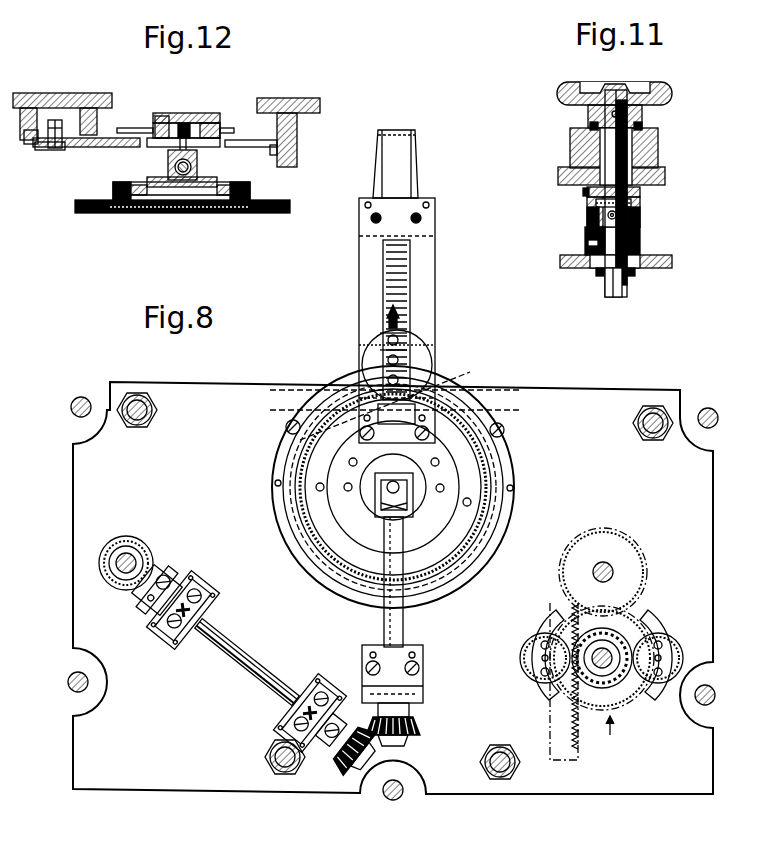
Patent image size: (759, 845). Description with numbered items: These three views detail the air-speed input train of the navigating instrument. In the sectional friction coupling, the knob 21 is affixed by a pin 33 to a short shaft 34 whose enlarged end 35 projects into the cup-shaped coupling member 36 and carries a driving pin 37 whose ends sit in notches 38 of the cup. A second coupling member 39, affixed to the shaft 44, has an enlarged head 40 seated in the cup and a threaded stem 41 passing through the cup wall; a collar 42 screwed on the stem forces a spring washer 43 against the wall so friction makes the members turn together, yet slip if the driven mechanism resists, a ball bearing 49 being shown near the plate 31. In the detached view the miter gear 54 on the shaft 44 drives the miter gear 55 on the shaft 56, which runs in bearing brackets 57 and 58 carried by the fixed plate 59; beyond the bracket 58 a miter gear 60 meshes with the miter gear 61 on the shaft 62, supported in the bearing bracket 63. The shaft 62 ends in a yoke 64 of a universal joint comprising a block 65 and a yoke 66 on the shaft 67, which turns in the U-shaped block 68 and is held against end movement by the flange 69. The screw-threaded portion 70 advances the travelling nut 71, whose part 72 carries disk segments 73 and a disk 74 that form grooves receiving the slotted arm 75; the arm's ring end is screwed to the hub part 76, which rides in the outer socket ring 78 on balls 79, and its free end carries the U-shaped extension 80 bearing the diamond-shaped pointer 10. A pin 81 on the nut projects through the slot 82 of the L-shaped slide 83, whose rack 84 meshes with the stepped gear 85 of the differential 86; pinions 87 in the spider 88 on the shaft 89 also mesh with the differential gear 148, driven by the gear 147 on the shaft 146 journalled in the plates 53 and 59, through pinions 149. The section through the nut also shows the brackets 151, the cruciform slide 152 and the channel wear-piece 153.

In FIG. 8, the diamond-shaped pointer 10 is at (400, 312).
In FIG. 11, the knob 21 is at (672, 92).
In FIG. 11, the plate 31 is at (668, 268).
In FIG. 11, the pin 33 is at (605, 112).
In FIG. 11, the short shaft 34 is at (630, 124).
In FIG. 11, the enlarged end 35 is at (641, 191).
In FIG. 11, the cup-shaped coupling member 36 is at (640, 217).
In FIG. 11, the driving pin 37 is at (583, 192).
In FIG. 11, the notches 38 is at (596, 203).
In FIG. 11, the second coupling member 39 is at (588, 220).
In FIG. 11, the enlarged head 40 is at (636, 226).
In FIG. 11, the stem 41 is at (585, 241).
In FIG. 11, the collar 42 is at (588, 252).
In FIG. 11, the spring washer 43 is at (640, 245).
In FIG. 11, the shaft 44 is at (605, 288).
In FIG. 8, the shaft 44 is at (114, 563).
In FIG. 11, the ball bearing 49 is at (640, 272).
In FIG. 12, the fixed plate 53 is at (50, 94).
In FIG. 8, the miter gear 54 is at (118, 538).
In FIG. 8, the miter gear 55 is at (130, 598).
In FIG. 8, the shaft 56 is at (240, 662).
In FIG. 8, the bearing bracket 57 is at (165, 630).
In FIG. 8, the bearing bracket 58 is at (285, 715).
In FIG. 8, the fixed plate 59 is at (73, 763).
In FIG. 8, the miter gear 60 is at (348, 765).
In FIG. 8, the miter gear 61 is at (418, 740).
In FIG. 8, the shaft 62 is at (404, 632).
In FIG. 8, the bearing bracket 63 is at (424, 686).
In FIG. 8, the yoke 64 is at (414, 500).
In FIG. 8, the block 65 is at (380, 512).
In FIG. 8, the yoke 66 is at (366, 487).
In FIG. 8, the shaft 67 is at (440, 380).
In FIG. 8, the U-shaped block 68 is at (470, 410).
In FIG. 8, the flange 69 is at (455, 390).
In FIG. 12, the screw-threaded portion 70 is at (192, 167).
In FIG. 8, the screw-threaded portion 70 is at (412, 251).
In FIG. 12, the travelling nut 71 is at (170, 160).
In FIG. 8, the travelling nut 71 is at (383, 340).
In FIG. 12, the nut part 72 is at (168, 160).
In FIG. 8, the nut part 72 is at (385, 355).
In FIG. 12, the disk segments 73 is at (150, 180).
In FIG. 8, the disk segments 73 is at (368, 355).
In FIG. 12, the disk 74 is at (205, 213).
In FIG. 12, the slotted arm 75 is at (252, 186).
In FIG. 8, the slotted arm 75 is at (359, 272).
In FIG. 12, the annular hub part 76 is at (250, 197).
In FIG. 8, the annular hub part 76 is at (290, 445).
In FIG. 12, the outer socket ring 78 is at (262, 213).
In FIG. 8, the outer socket ring 78 is at (300, 465).
In FIG. 8, the balls 79 is at (320, 505).
In FIG. 8, the U-shaped extension 80 is at (410, 160).
In FIG. 12, the pin 81 is at (210, 146).
In FIG. 8, the pin 81 is at (362, 363).
In FIG. 12, the slot 82 is at (240, 141).
In FIG. 12, the L-shaped slide 83 is at (96, 147).
In FIG. 12, the rack 84 is at (43, 150).
In FIG. 8, the rack 84 is at (550, 718).
In FIG. 8, the gear 85 is at (615, 686).
In FIG. 8, the differential 86 is at (606, 735).
In FIG. 8, the pinions 87 is at (530, 672).
In FIG. 8, the spider 88 is at (652, 615).
In FIG. 8, the shaft 89 is at (555, 625).
In FIG. 8, the shaft 146 is at (614, 567).
In FIG. 8, the gear 147 is at (636, 574).
In FIG. 8, the differential gear 148 is at (625, 618).
In FIG. 8, the pinions 149 is at (535, 640).
In FIG. 12, the brackets 151 is at (186, 113).
In FIG. 12, the cruciform slide 152 is at (137, 128).
In FIG. 12, the channel 153 is at (212, 122).